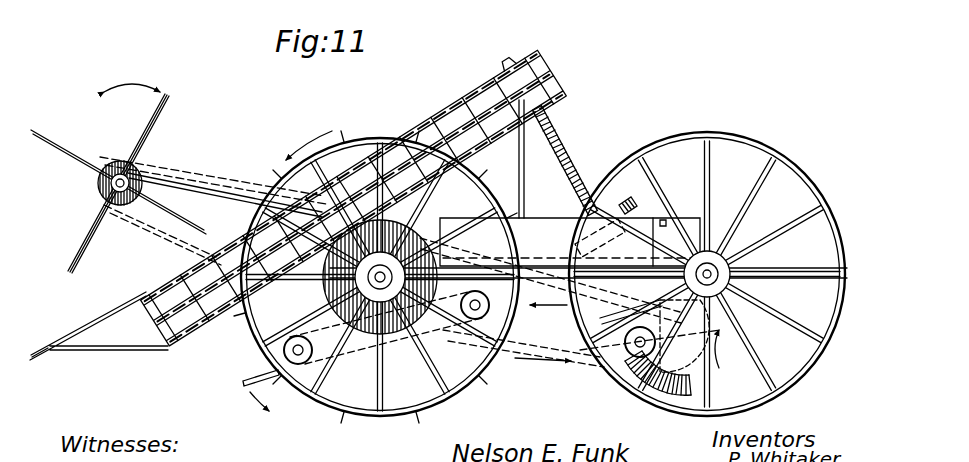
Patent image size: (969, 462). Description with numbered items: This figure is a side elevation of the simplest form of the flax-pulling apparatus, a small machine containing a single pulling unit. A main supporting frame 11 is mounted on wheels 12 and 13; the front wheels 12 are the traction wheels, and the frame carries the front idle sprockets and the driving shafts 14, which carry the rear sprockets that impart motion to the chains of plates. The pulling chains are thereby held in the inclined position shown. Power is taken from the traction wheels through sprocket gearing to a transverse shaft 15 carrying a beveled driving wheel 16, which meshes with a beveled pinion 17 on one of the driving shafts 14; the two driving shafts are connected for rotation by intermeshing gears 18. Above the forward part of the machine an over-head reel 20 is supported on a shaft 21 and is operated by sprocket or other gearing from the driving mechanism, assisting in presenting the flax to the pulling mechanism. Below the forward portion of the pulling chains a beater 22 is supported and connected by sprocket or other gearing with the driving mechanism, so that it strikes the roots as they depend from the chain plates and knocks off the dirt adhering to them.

The main supporting frame 11 is at (533, 230).
The front wheels 12 is at (378, 416).
The wheels 13 is at (692, 406).
The driving shafts 14 is at (562, 134).
The transverse shaft 15 is at (621, 381).
The beveled driving wheel 16 is at (662, 394).
The beveled pinion 17 is at (640, 316).
The intermeshing gears 18 is at (626, 203).
The over-head reel 20 is at (162, 121).
The shaft 21 is at (117, 162).
The beater 22 is at (293, 394).